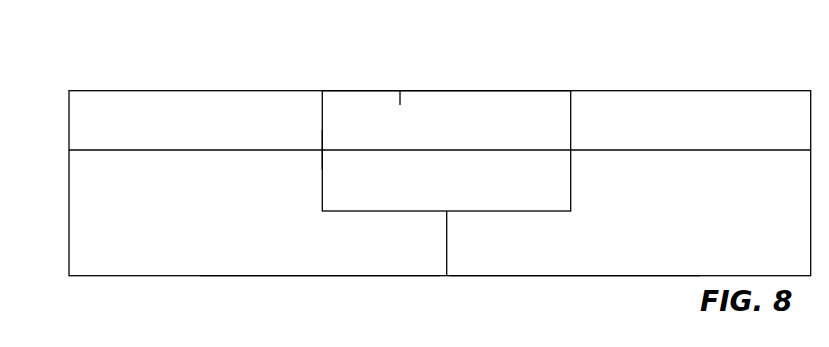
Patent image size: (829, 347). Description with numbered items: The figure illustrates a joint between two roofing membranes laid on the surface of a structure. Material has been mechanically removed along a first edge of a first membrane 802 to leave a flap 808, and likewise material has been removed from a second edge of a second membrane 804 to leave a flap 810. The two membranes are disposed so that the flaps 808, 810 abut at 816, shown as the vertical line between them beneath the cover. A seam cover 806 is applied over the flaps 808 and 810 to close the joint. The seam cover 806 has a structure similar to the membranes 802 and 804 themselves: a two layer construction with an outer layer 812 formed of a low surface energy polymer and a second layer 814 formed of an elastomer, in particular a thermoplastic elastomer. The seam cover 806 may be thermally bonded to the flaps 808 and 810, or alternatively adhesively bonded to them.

The first membrane 802 is at (102, 63).
The second membrane 804 is at (652, 75).
The seam cover 806 is at (438, 67).
The flap 808 is at (390, 243).
The flap 810 is at (527, 252).
The outer layer 812 is at (400, 105).
The second layer 814 is at (373, 175).
The abutment 816 is at (447, 258).